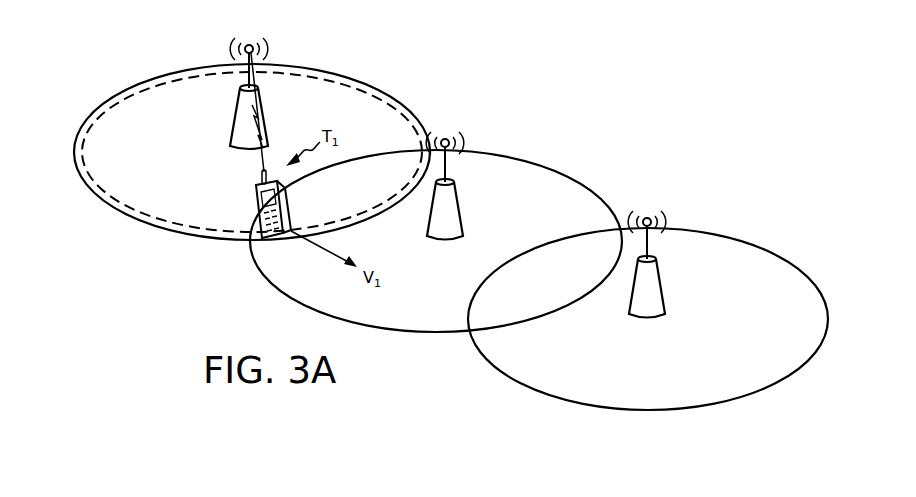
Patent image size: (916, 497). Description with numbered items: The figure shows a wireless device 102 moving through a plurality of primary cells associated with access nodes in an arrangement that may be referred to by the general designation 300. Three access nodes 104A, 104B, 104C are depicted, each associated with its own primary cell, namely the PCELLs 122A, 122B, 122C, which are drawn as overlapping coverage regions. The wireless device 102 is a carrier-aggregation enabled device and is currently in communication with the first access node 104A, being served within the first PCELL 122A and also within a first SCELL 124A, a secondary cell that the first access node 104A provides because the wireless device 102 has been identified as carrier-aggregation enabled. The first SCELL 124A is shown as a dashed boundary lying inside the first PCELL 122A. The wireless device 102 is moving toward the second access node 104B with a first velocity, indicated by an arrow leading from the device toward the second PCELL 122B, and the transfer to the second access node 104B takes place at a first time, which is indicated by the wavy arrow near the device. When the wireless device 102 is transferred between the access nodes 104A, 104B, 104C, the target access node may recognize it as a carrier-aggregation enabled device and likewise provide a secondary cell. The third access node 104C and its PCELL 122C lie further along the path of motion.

The wireless device 102 is at (257, 183).
The first access node 104A is at (233, 130).
The second access node 104B is at (459, 209).
The access node 104C is at (662, 287).
The first PCELL 122A is at (397, 101).
The PCELL 122B is at (560, 174).
The PCELL 122C is at (762, 250).
The first SCELL 124A is at (337, 83).
The wireless network environment 300 is at (860, 370).